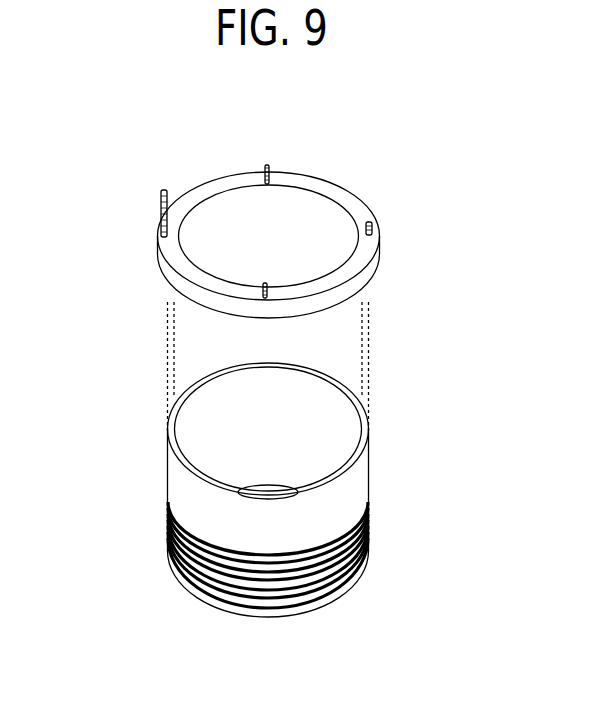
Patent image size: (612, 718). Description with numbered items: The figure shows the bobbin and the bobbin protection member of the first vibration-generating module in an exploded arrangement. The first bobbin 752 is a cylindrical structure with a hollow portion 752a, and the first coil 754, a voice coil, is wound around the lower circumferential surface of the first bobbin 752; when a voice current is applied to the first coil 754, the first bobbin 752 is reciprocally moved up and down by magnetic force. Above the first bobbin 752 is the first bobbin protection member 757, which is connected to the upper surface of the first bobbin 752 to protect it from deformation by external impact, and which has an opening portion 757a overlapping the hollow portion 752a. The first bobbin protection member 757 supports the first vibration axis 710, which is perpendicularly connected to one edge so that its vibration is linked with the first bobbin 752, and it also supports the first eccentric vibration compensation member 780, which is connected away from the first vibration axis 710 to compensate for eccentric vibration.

The first vibration axis 710 is at (159, 210).
The first bobbin protection member 757 is at (156, 261).
The opening portion 757a is at (313, 215).
The first eccentric vibration compensation member 780 is at (381, 230).
The first bobbin 752 is at (166, 495).
The hollow portion 752a is at (274, 395).
The first coil 754 is at (166, 558).